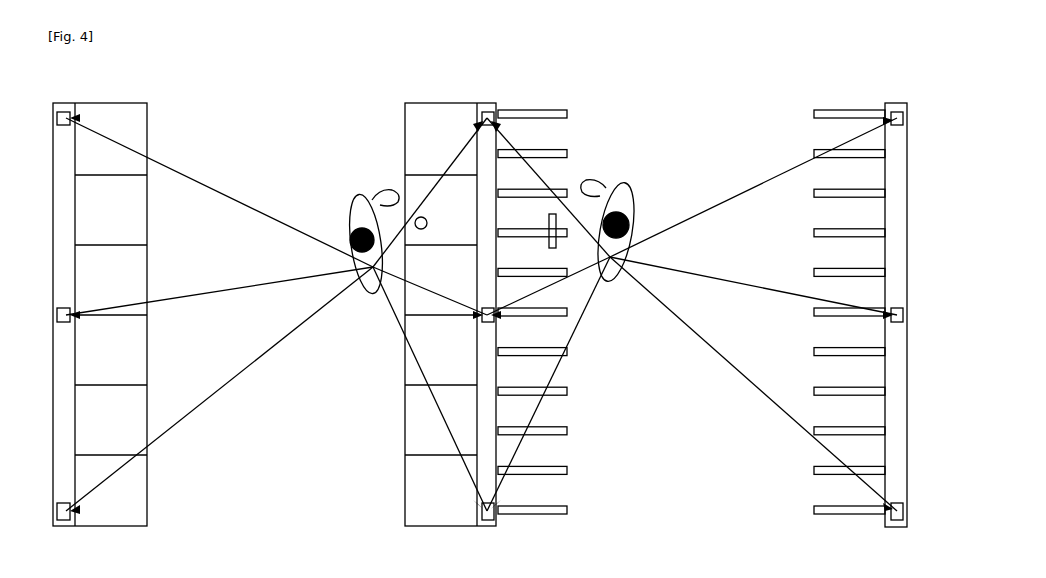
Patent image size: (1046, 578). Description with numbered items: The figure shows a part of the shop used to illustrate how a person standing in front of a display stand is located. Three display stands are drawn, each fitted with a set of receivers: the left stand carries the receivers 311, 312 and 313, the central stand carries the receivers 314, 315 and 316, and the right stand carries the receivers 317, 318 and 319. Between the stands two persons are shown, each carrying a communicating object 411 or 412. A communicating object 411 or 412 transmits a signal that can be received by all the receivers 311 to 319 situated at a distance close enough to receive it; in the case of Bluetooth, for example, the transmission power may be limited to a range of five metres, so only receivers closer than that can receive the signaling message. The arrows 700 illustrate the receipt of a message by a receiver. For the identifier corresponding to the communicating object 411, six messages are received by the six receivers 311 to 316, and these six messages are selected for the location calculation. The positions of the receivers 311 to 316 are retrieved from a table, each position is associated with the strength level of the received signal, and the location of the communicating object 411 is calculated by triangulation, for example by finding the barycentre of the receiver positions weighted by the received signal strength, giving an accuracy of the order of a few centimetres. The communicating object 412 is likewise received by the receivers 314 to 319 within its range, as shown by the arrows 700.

The receiver 311 is at (72, 116).
The receiver 312 is at (72, 320).
The receiver 313 is at (72, 516).
The receiver 314 is at (481, 115).
The receiver 315 is at (481, 320).
The receiver 316 is at (481, 515).
The receiver 317 is at (889, 112).
The receiver 318 is at (889, 322).
The receiver 319 is at (889, 510).
The communicating object 411 is at (368, 292).
The communicating object 412 is at (610, 282).
The arrows 700 is at (225, 378).